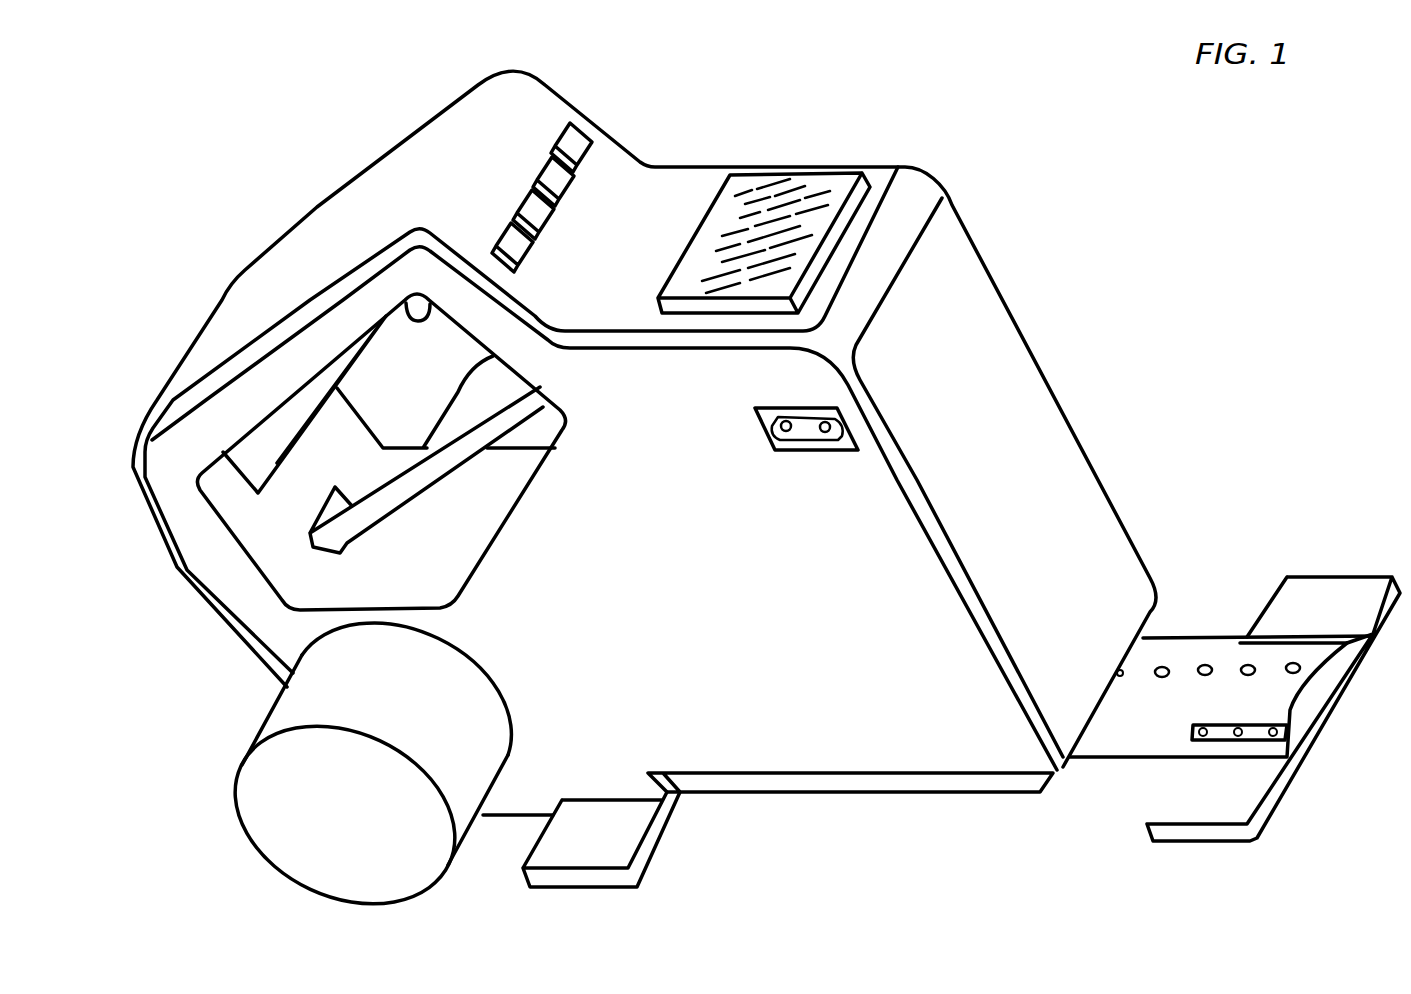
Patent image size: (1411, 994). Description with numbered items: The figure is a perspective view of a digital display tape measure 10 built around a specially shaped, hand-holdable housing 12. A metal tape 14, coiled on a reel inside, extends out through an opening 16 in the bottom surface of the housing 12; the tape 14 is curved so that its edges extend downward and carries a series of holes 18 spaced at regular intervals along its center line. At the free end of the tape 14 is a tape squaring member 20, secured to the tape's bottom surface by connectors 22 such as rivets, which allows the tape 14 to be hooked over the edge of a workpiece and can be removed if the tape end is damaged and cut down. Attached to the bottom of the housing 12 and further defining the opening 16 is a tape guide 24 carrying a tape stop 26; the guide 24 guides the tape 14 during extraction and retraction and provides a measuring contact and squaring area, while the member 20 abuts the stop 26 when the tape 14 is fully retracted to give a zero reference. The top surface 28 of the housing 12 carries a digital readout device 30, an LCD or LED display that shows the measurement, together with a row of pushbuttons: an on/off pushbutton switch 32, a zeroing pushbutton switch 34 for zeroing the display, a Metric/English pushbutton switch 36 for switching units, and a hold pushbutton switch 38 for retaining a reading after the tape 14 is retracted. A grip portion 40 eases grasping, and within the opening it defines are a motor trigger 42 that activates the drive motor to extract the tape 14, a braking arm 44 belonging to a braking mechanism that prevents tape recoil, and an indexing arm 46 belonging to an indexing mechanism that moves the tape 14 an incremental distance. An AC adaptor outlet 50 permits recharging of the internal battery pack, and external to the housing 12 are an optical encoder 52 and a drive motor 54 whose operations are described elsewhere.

The digital display tape measure 10 is at (988, 134).
The housing 12 is at (990, 312).
The metal tape 14 is at (1168, 630).
The opening 16 is at (706, 806).
The holes 18 is at (1162, 678).
The tape squaring member 20 is at (1331, 577).
The connectors 22 is at (1253, 724).
The tape guide 24 is at (848, 795).
The tape stop 26 is at (647, 850).
The top surface 28 is at (625, 165).
The digital readout device 30 is at (700, 238).
The on/off pushbutton switch 32 is at (563, 131).
The zeroing pushbutton switch 34 is at (546, 170).
The Metric/English pushbutton switch 36 is at (527, 208).
The hold pushbutton switch 38 is at (510, 243).
The grip portion 40 is at (318, 215).
The motor trigger 42 is at (416, 310).
The braking arm 44 is at (280, 432).
The indexing arm 46 is at (410, 480).
The AC adaptor outlet 50 is at (828, 452).
The optical encoder 52 is at (470, 685).
The drive motor 54 is at (465, 397).